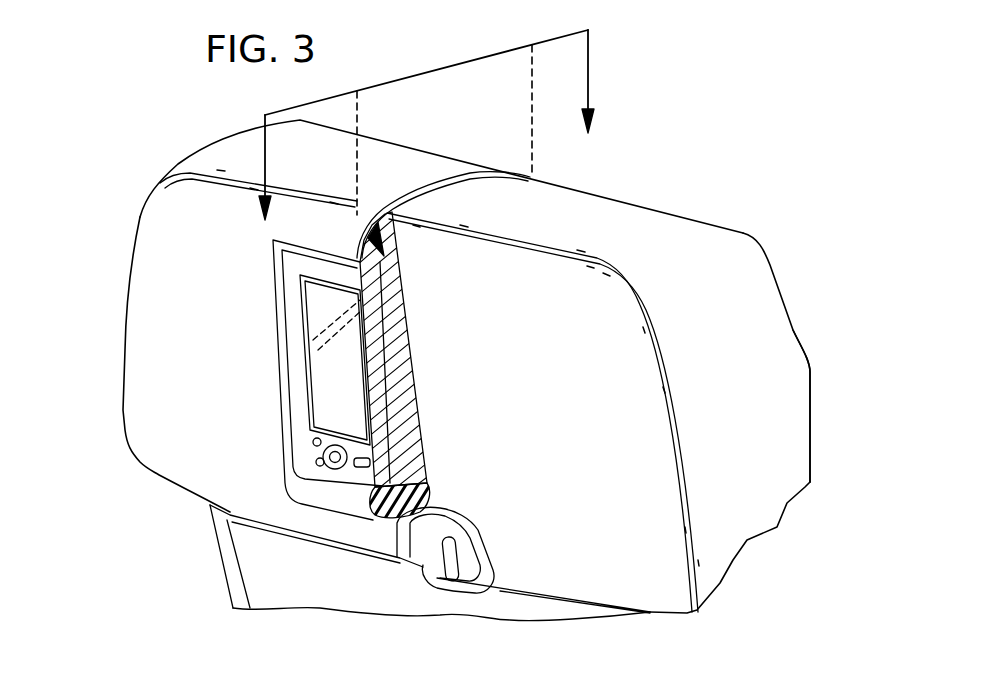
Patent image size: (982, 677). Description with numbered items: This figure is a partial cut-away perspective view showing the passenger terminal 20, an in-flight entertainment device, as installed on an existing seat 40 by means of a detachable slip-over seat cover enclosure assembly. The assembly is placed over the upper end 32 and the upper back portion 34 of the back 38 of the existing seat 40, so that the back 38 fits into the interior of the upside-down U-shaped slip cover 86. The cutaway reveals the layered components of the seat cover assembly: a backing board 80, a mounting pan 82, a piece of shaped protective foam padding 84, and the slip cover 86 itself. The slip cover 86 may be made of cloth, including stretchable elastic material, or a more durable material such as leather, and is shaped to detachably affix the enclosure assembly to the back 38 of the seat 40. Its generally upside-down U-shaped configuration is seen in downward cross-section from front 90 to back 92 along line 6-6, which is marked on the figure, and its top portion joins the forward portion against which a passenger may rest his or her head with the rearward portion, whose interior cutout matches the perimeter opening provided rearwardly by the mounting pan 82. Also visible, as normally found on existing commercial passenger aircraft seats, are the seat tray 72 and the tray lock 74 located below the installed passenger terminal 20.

The line 6- 6 is at (426, 112).
The passenger terminal 20 is at (376, 308).
The upper end 32 is at (605, 222).
The upper back portion 34 is at (631, 447).
The back 38 is at (778, 388).
The existing seat 40 is at (225, 568).
The seat tray 72 is at (303, 593).
The tray lock 74 is at (437, 577).
The backing board 80 is at (412, 393).
The mounting pan 82 is at (407, 448).
The protective foam padding 84 is at (433, 495).
The slip cover 86 is at (447, 180).
The front 90 is at (473, 157).
The back 92 is at (125, 402).